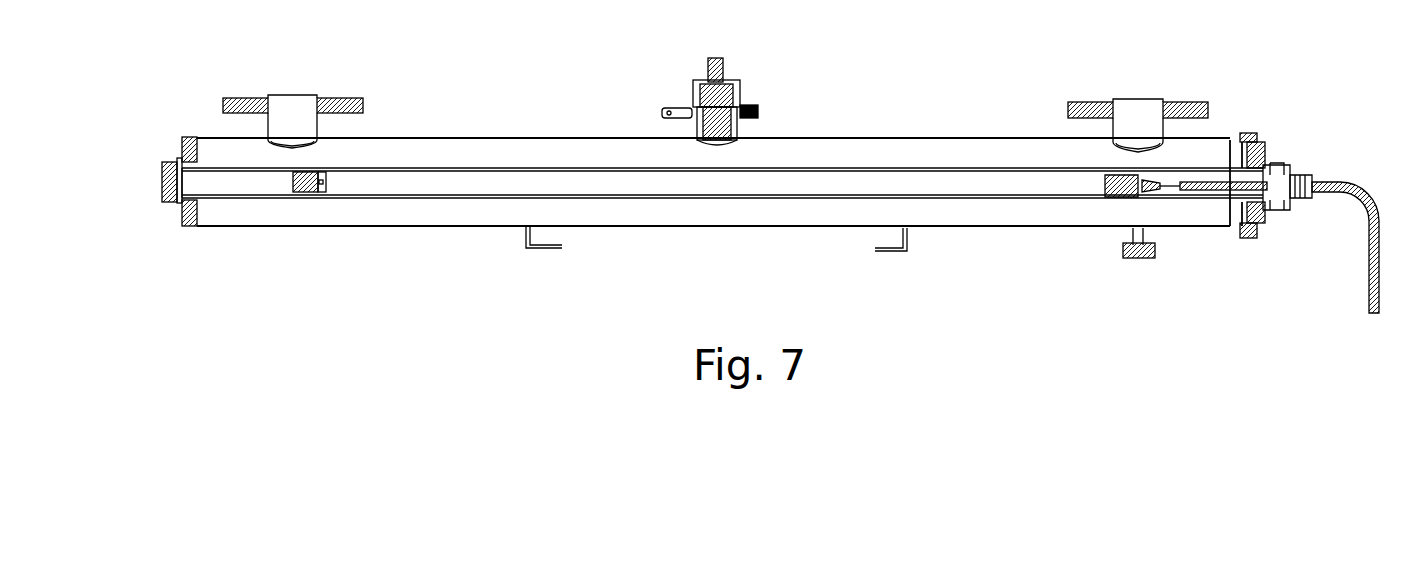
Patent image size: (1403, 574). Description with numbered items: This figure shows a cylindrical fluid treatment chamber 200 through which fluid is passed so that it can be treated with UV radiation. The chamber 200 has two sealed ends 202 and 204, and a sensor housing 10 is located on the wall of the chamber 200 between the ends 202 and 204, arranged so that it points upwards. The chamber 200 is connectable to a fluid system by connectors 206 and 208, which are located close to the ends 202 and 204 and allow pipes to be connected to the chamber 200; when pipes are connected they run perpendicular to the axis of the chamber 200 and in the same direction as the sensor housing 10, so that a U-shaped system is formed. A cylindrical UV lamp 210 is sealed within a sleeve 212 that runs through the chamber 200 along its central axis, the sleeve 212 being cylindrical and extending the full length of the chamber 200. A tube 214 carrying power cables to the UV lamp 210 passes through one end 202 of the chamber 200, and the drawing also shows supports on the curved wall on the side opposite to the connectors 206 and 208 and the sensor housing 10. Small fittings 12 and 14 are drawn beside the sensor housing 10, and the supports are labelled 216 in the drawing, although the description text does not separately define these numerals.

The sensor housing 10 is at (730, 83).
The side tab 12 is at (692, 105).
The block 14 is at (732, 130).
The cylindrical fluid treatment chamber 200 is at (897, 140).
The sealed end 202 is at (1263, 145).
The sealed end 204 is at (165, 162).
The connector 206 is at (1110, 102).
The connector 208 is at (292, 107).
The cylindrical UV lamp 210 is at (507, 180).
The sleeve 212 is at (403, 167).
The tube 214 is at (1355, 202).
The support bracket 216 is at (553, 253).